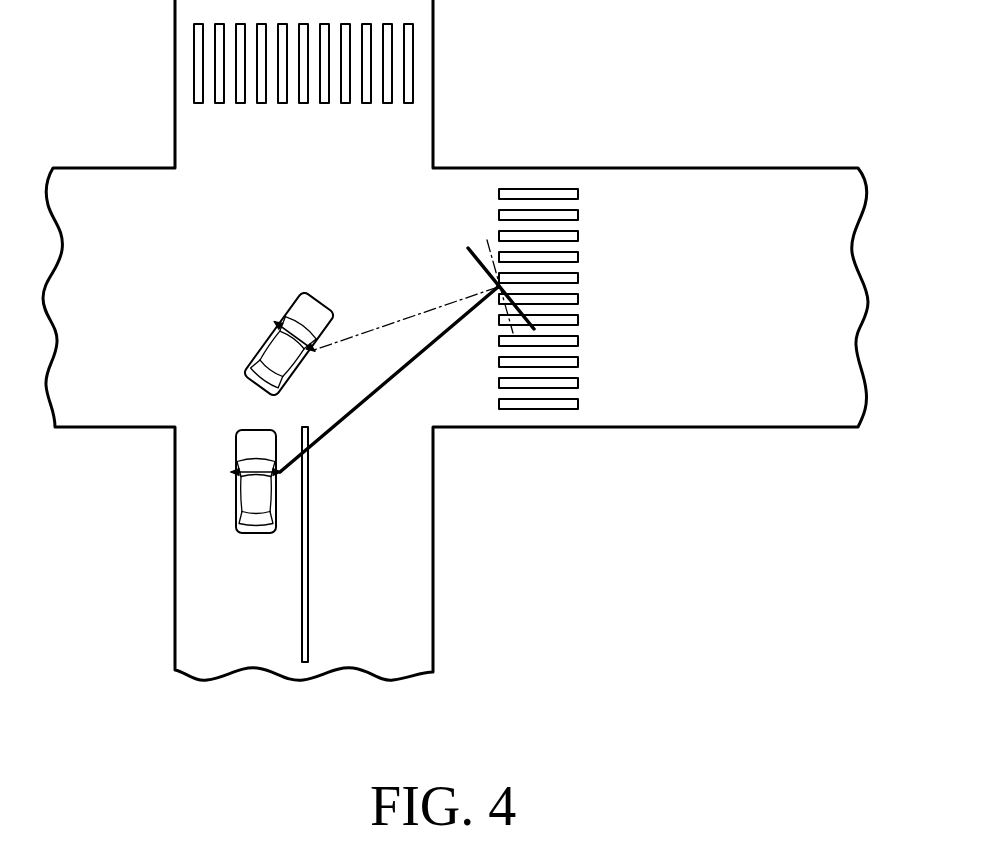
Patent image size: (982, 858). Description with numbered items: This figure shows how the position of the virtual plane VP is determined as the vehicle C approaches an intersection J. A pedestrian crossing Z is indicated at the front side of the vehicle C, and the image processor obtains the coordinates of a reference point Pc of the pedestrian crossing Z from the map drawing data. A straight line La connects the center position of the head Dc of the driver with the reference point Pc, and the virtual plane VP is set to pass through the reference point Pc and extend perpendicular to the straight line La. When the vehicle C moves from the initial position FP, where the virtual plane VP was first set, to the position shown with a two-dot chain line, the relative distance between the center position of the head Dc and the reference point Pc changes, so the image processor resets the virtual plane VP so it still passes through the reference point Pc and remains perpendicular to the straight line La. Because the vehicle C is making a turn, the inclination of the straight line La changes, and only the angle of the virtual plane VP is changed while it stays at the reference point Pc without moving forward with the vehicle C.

The intersection J is at (305, 202).
The pedestrian crossing Z is at (578, 256).
The virtual plane VP is at (487, 240).
The straight line La is at (398, 317).
The reference point Pc is at (498, 289).
The vehicle C is at (250, 363).
The initial position FP is at (255, 535).
The center position of the head Dc is at (275, 324).